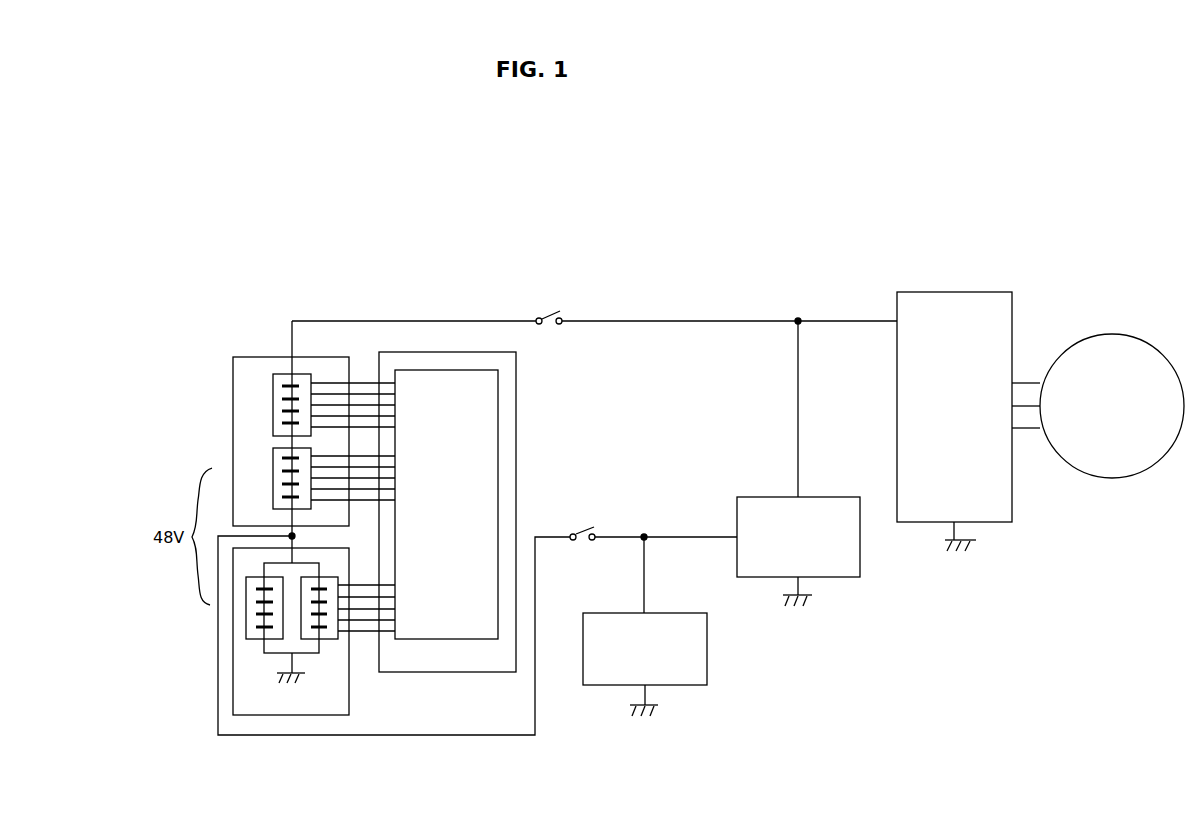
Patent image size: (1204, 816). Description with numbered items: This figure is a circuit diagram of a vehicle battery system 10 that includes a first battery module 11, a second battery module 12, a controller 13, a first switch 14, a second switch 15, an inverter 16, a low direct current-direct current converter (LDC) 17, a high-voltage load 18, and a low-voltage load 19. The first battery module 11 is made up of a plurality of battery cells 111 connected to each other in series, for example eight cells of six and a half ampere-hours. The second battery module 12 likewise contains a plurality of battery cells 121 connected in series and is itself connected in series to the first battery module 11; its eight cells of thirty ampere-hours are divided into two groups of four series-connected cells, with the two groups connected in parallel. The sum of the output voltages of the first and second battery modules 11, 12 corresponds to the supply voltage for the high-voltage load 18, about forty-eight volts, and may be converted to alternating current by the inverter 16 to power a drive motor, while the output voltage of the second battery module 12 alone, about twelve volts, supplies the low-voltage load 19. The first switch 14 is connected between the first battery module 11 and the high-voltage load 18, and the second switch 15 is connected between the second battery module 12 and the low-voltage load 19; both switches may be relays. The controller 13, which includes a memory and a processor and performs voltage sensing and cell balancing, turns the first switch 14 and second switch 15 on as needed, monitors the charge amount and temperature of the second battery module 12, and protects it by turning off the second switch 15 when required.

The vehicle battery system 10 is at (720, 229).
The first battery module 11 is at (233, 430).
The battery cells 111 is at (280, 385).
The second battery module 12 is at (233, 672).
The battery cells 121 is at (256, 626).
The controller 13 is at (516, 393).
The first switch 14 is at (548, 310).
The second switch 15 is at (579, 526).
The inverter 16 is at (962, 292).
The low direct current-direct current (LDC) 17 is at (765, 497).
The high-voltage load 18 is at (1115, 335).
The low-voltage load 19 is at (707, 647).